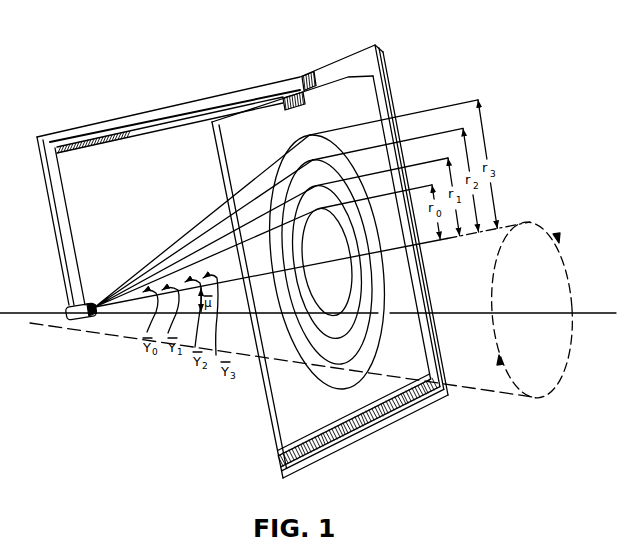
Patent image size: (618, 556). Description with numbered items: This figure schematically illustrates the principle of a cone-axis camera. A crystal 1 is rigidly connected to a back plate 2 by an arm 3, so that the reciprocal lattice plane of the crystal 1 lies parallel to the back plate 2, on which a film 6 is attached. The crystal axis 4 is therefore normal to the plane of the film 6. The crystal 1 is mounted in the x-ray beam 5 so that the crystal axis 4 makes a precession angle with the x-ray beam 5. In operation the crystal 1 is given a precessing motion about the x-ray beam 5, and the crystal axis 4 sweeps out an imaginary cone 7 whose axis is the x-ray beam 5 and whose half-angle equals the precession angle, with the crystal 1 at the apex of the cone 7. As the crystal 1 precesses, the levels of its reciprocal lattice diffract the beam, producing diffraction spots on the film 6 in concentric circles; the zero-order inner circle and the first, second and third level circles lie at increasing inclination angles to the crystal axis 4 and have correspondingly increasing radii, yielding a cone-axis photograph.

The crystal 1 is at (85, 321).
The back plate 2 is at (387, 60).
The arm 3 is at (167, 116).
The crystal axis 4 is at (226, 288).
The x-ray beam 5 is at (226, 313).
The film 6 is at (367, 103).
The imaginary cone 7 is at (531, 222).